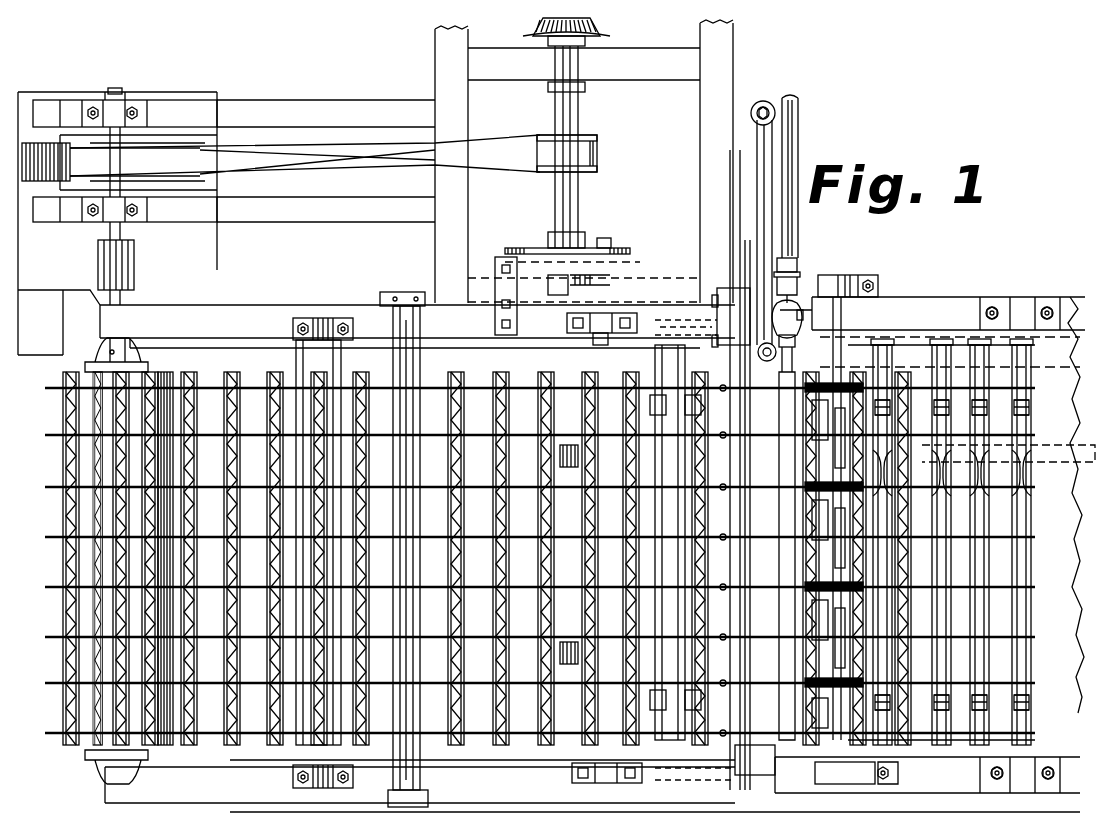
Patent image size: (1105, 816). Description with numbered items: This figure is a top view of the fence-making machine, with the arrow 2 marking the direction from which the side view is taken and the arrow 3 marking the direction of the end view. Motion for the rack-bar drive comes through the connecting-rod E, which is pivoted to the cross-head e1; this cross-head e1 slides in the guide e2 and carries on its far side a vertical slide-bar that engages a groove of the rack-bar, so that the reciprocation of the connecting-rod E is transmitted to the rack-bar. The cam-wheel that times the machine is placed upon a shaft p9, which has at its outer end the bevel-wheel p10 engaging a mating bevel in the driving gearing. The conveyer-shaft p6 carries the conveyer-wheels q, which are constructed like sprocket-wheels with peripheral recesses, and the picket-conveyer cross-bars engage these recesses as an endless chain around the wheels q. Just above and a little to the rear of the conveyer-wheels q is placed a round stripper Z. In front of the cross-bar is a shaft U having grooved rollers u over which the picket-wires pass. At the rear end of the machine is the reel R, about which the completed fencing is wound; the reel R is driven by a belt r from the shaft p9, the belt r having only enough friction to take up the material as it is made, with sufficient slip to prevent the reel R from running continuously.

The bevel-wheel p10 is at (551, 32).
The shaft p9 is at (507, 228).
The conveyer-shaft p6 is at (616, 232).
The belt r is at (281, 155).
The guide e2 is at (760, 221).
The connecting-rod E is at (800, 176).
The cross-head e1 is at (804, 293).
The shaft U is at (836, 340).
The grooved rollers u is at (834, 555).
The round stripper Z is at (402, 413).
The conveyer-wheels q is at (567, 546).
The reel R is at (93, 561).
The arrow 2 is at (25, 593).
The arrow 3 is at (1020, 258).